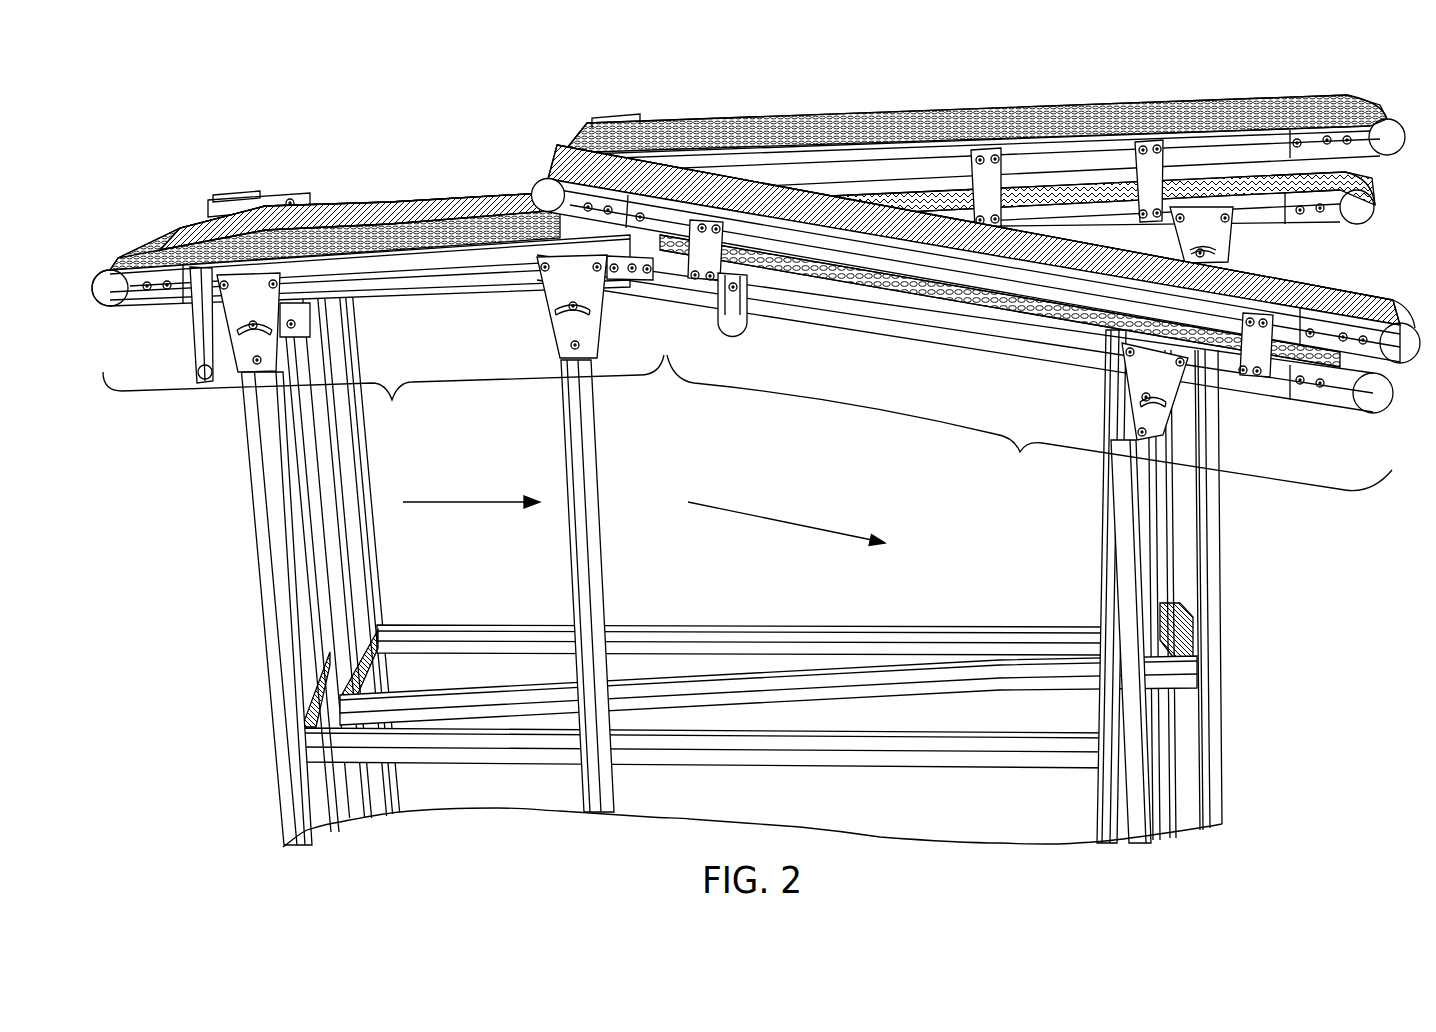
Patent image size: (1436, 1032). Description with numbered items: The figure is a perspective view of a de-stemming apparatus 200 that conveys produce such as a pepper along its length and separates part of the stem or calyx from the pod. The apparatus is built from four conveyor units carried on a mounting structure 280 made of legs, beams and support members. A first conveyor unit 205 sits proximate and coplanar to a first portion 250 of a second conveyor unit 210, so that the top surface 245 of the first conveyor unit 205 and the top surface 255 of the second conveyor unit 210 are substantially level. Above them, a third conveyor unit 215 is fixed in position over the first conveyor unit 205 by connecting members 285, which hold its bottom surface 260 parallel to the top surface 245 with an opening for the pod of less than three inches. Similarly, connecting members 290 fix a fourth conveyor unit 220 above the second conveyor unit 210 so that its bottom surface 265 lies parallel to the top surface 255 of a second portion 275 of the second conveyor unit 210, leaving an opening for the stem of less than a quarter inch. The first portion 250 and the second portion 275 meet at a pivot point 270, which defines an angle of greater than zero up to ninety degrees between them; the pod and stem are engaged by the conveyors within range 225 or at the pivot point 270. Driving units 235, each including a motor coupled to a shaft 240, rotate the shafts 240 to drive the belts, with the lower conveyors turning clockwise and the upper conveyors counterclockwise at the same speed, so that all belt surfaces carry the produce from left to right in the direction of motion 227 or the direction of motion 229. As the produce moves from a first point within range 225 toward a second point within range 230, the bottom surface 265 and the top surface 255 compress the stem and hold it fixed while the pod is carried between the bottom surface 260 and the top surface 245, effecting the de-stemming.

The de-stemming apparatus 200 is at (230, 119).
The first conveyor unit 205 is at (192, 226).
The second conveyor unit 210 is at (140, 250).
The third conveyor unit 215 is at (741, 158).
The fourth conveyor unit 220 is at (1042, 273).
The range 225 is at (383, 396).
The direction of motion 227 is at (470, 492).
The direction of motion 229 is at (793, 516).
The range 230 is at (1029, 423).
The driving unit 235 is at (245, 193).
The shaft 240 is at (108, 292).
The top surface 245 is at (372, 206).
The first portion 250 is at (423, 268).
The top surface 255 is at (486, 234).
The bottom surface 260 is at (822, 190).
The bottom surface 265 is at (1125, 325).
The pivot point 270 is at (645, 260).
The second portion 275 is at (913, 298).
The mounting structure 280 is at (262, 570).
The connecting member 285 is at (985, 158).
The connecting member 290 is at (706, 266).